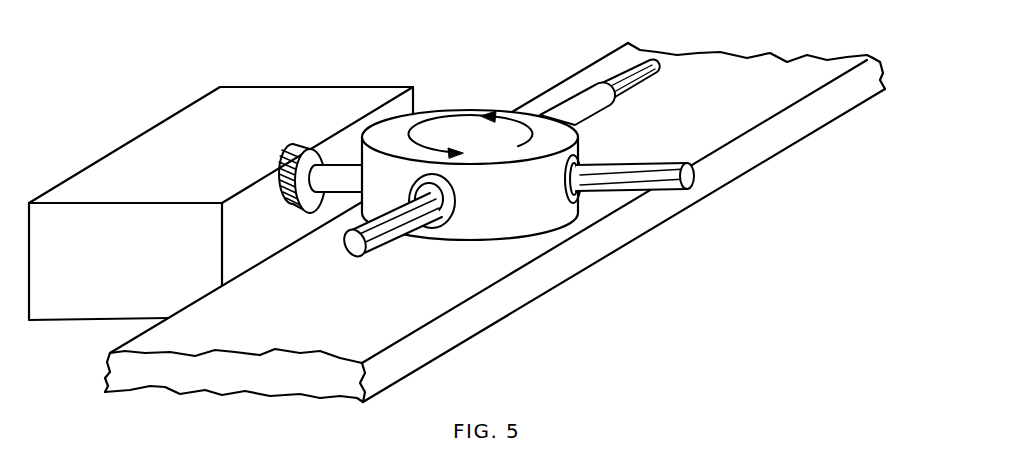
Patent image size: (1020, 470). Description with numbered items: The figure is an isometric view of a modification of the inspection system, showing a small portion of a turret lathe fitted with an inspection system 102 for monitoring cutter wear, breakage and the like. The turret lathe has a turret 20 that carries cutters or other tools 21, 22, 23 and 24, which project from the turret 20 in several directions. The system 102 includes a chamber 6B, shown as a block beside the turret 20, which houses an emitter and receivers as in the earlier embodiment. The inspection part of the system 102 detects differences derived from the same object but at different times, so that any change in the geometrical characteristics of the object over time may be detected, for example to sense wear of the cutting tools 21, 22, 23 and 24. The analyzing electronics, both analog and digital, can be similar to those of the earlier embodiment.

The chamber 6B is at (326, 88).
The system 102 is at (767, 53).
The turret 20 is at (492, 223).
The cutter or other tool 21 is at (298, 214).
The cutter or other tool 22 is at (380, 248).
The cutter or other tool 23 is at (645, 163).
The cutter or other tool 24 is at (644, 64).